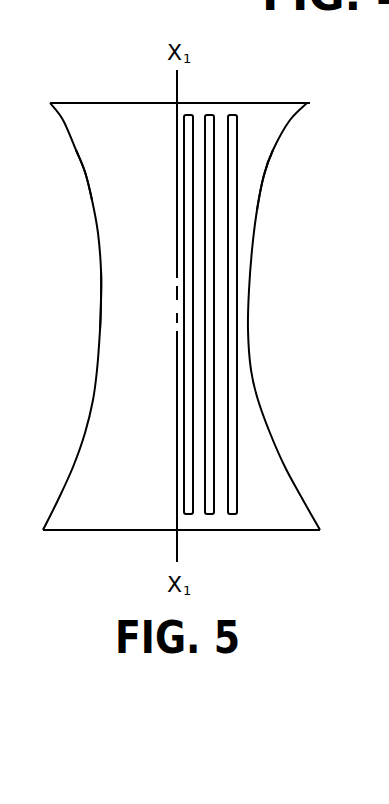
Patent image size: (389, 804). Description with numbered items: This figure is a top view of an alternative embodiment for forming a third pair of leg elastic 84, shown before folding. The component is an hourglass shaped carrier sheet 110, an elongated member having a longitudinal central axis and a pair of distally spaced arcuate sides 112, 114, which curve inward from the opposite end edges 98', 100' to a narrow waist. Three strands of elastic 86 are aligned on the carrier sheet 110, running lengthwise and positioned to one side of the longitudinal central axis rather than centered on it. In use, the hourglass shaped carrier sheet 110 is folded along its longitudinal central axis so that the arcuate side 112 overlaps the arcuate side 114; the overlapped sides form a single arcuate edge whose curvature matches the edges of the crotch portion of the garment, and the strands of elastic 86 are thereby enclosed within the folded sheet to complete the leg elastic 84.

The third pair of leg elastic 84 is at (113, 64).
The strands of elastic 86 is at (191, 382).
The first end edge 98' is at (279, 80).
The second end edge 100' is at (277, 551).
The hourglass shaped carrier sheet 110 is at (112, 172).
The arcuate side 112 is at (100, 303).
The arcuate side 114 is at (264, 175).